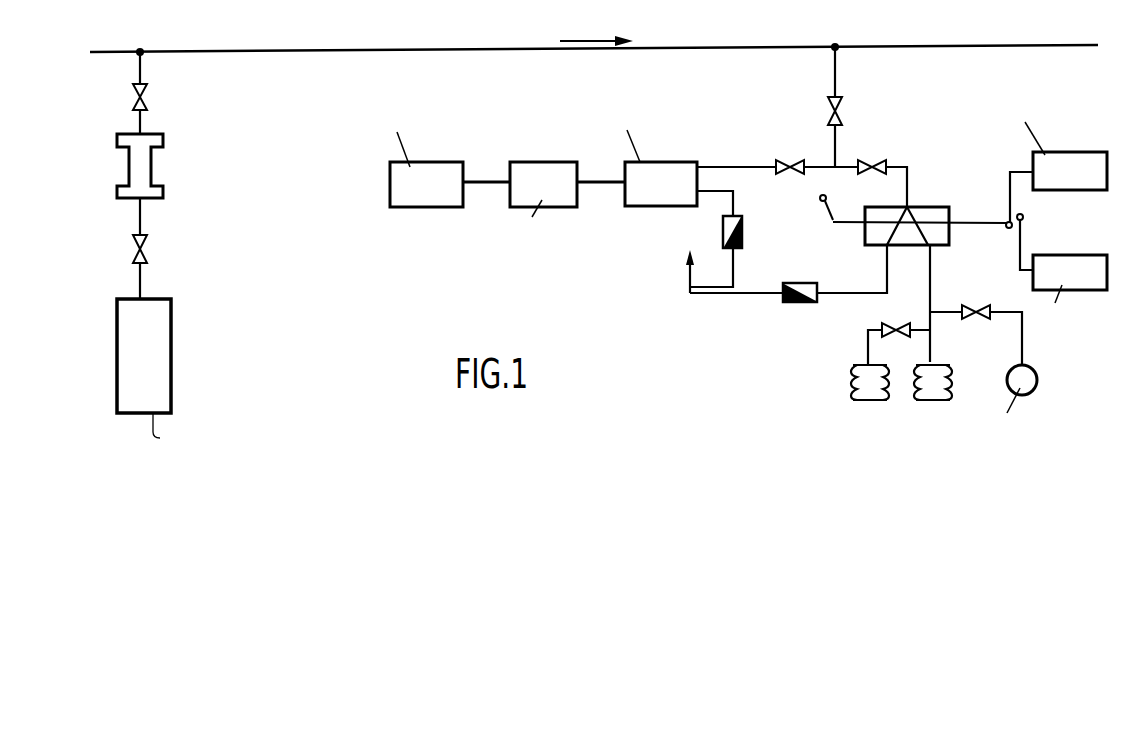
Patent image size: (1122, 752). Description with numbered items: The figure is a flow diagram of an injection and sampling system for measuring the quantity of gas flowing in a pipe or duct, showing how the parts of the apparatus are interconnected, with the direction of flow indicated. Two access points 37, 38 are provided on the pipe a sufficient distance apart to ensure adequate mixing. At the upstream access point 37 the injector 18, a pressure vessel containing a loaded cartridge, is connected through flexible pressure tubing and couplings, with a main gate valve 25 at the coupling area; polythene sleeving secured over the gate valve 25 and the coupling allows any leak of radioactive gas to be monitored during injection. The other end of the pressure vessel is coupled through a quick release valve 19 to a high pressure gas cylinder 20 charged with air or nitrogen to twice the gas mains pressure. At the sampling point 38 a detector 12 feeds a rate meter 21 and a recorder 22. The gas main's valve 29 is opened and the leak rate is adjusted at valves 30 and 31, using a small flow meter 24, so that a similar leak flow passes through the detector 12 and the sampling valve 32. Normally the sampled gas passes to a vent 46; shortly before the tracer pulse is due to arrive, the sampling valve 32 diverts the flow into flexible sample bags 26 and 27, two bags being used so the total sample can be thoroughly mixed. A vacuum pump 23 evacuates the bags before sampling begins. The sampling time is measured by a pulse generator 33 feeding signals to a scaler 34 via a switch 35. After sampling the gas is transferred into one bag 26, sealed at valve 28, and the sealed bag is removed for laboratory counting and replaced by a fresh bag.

The detector 12 is at (670, 162).
The injector 18 is at (163, 165).
The quick release valve 19 is at (148, 255).
The gas cylinder 20 is at (171, 346).
The rate meter 21 is at (544, 165).
The recorder 22 is at (426, 162).
The vacuum pump 23 is at (1037, 372).
The flow meter 24 is at (722, 225).
The main gate valve 25 is at (134, 95).
The flexible sample bag 26 is at (855, 387).
The flexible sample bag 27 is at (948, 387).
The valve 28 is at (897, 325).
The gas main's valve 29 is at (843, 111).
The valve 30 is at (872, 160).
The valve 31 is at (785, 160).
The sampling valve 32 is at (942, 212).
The pulse generator 33 is at (1080, 152).
The scaler 34 is at (1097, 255).
The switch 35 is at (1024, 221).
The upstream access point 37 is at (140, 50).
The sampling point 38 is at (835, 45).
The vent 46 is at (688, 292).